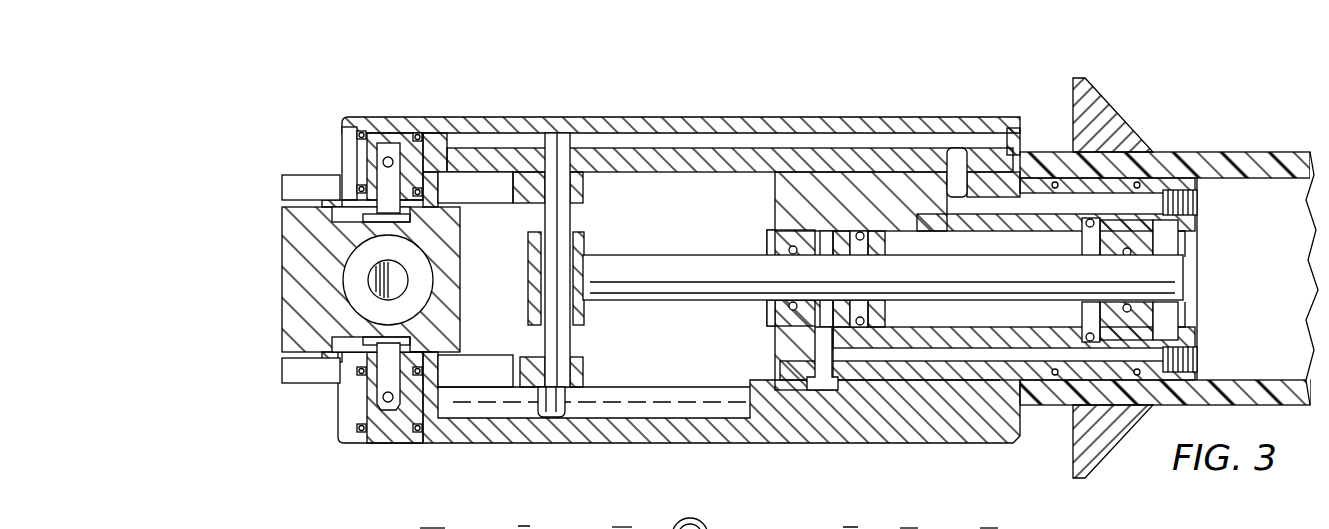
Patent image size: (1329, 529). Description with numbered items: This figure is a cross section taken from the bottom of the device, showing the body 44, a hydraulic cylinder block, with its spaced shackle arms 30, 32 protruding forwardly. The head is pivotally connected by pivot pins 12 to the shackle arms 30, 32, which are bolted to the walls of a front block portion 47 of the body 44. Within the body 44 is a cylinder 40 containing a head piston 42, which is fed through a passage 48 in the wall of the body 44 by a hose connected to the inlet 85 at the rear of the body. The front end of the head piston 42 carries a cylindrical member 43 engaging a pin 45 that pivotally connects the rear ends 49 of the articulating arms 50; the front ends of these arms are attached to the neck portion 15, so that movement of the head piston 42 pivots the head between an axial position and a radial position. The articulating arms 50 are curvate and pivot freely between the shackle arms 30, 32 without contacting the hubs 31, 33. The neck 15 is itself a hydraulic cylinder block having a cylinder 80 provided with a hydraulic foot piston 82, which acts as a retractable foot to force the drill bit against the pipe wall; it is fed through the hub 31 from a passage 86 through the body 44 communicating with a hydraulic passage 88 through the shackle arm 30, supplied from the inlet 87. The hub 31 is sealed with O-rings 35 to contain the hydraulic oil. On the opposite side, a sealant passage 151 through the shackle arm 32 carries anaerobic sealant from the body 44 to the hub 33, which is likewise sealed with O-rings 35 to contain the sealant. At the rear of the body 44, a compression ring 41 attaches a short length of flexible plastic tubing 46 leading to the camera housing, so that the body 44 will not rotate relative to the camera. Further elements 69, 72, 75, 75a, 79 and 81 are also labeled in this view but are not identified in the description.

The pivot pins 12 is at (372, 172).
The neck portion 15 is at (316, 250).
The shackle arm 30 is at (693, 120).
The hub 31 is at (337, 142).
The shackle arm 32 is at (793, 432).
The hub 33 is at (338, 410).
The O-rings 35 is at (345, 117).
The cylinder 40 is at (1000, 245).
The compression ring 41 is at (1113, 107).
The head piston 42 is at (661, 250).
The cylindrical member 43 is at (587, 247).
The body 44 is at (838, 185).
The pin 45 is at (538, 418).
The flexible plastic tubing 46 is at (1237, 150).
The front block portion 47 is at (775, 228).
The passage 48 is at (1028, 398).
The rear ends 49 is at (575, 130).
The articulating arms 50 is at (482, 187).
The line 69 is at (627, 528).
The line 72 is at (909, 528).
The fitting 75 is at (989, 528).
The fitting 75a is at (430, 518).
The fitting 79 is at (707, 528).
The cylinder 80 is at (348, 262).
The line 81 is at (853, 528).
The hydraulic foot piston 82 is at (385, 284).
The inlet 85 is at (1197, 368).
The passage 86 is at (1037, 203).
The inlet 87 is at (1200, 203).
The hydraulic passage 88 is at (898, 137).
The passage 151 is at (838, 441).